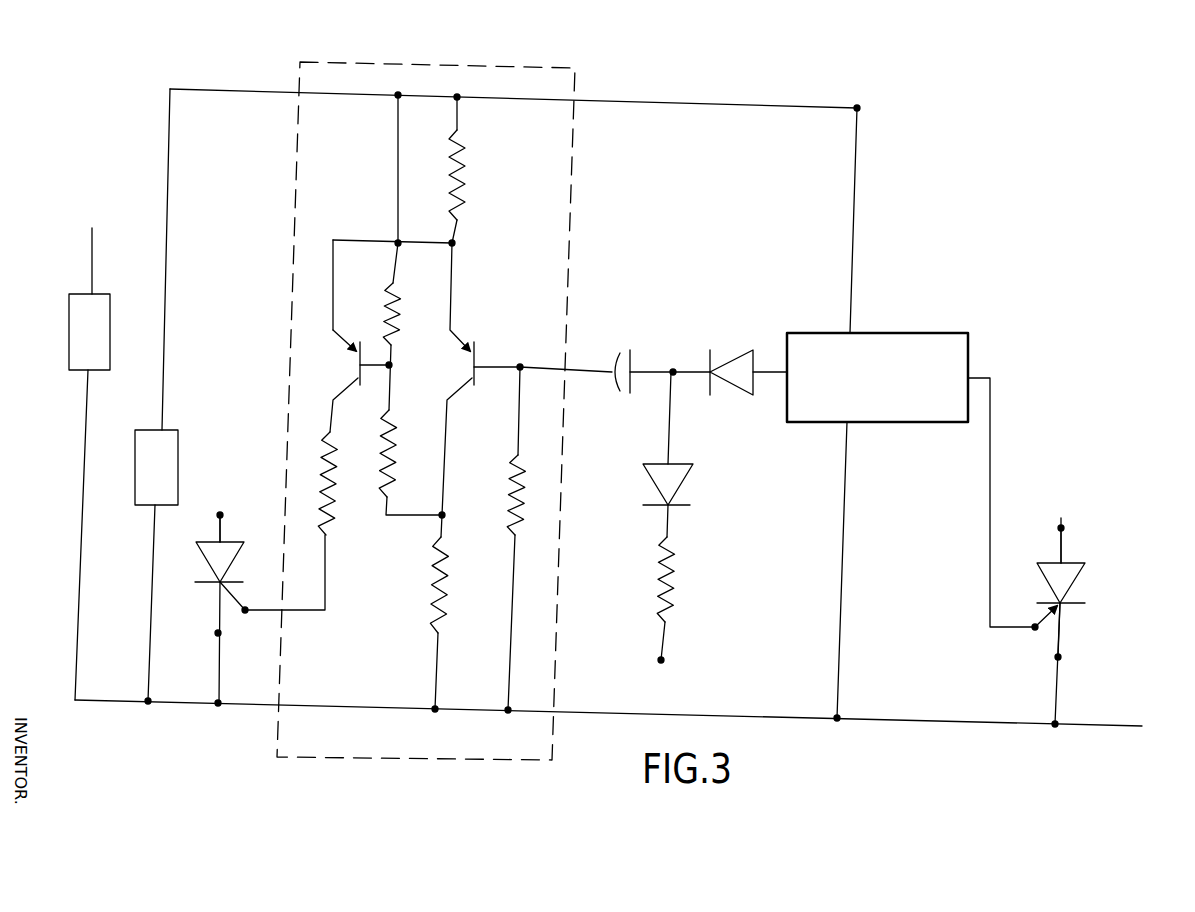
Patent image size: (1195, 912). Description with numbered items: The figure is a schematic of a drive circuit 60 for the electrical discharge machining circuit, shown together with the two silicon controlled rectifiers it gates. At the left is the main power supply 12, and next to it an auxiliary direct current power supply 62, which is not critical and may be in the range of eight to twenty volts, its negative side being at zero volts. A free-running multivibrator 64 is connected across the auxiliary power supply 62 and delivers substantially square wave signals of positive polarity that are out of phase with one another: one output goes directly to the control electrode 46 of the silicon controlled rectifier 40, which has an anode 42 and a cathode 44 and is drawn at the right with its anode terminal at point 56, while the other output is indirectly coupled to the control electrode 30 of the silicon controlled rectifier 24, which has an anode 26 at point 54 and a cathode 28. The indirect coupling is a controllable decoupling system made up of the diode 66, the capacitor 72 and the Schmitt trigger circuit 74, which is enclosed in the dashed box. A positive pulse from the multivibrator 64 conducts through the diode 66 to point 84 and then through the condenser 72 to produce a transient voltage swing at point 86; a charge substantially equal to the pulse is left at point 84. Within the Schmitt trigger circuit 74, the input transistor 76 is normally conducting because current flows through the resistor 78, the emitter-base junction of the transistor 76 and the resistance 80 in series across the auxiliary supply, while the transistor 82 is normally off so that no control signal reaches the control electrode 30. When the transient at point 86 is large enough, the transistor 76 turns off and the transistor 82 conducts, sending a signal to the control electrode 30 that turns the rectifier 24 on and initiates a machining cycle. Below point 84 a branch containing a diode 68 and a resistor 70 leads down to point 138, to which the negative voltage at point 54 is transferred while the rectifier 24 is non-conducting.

The power supply 12 is at (69, 333).
The auxiliary direct current power supply 62 is at (180, 460).
The silicon controlled rectifier 24 is at (200, 558).
The point 54 is at (221, 515).
The anode 26 is at (222, 535).
The cathode 28 is at (218, 625).
The control electrode 30 is at (244, 612).
The Schmitt trigger circuit 74 is at (399, 62).
The resistor 78 is at (462, 186).
The transistor 82 is at (358, 371).
The input transistor 76 is at (477, 351).
The point 86 is at (517, 372).
The resistance 80 is at (512, 508).
The capacitor 72 is at (632, 357).
The point 84 is at (672, 373).
The diode 66 is at (741, 350).
The free-running multivibrator 64 is at (888, 333).
The drive circuit 60 is at (952, 224).
The diode 68 is at (677, 489).
The resistor 70 is at (672, 590).
The point 138 is at (663, 660).
The silicon controlled rectifier 40 is at (1075, 582).
The point 56 is at (1061, 518).
The anode 42 is at (1062, 550).
The cathode 44 is at (1062, 626).
The control electrode 46 is at (1036, 630).